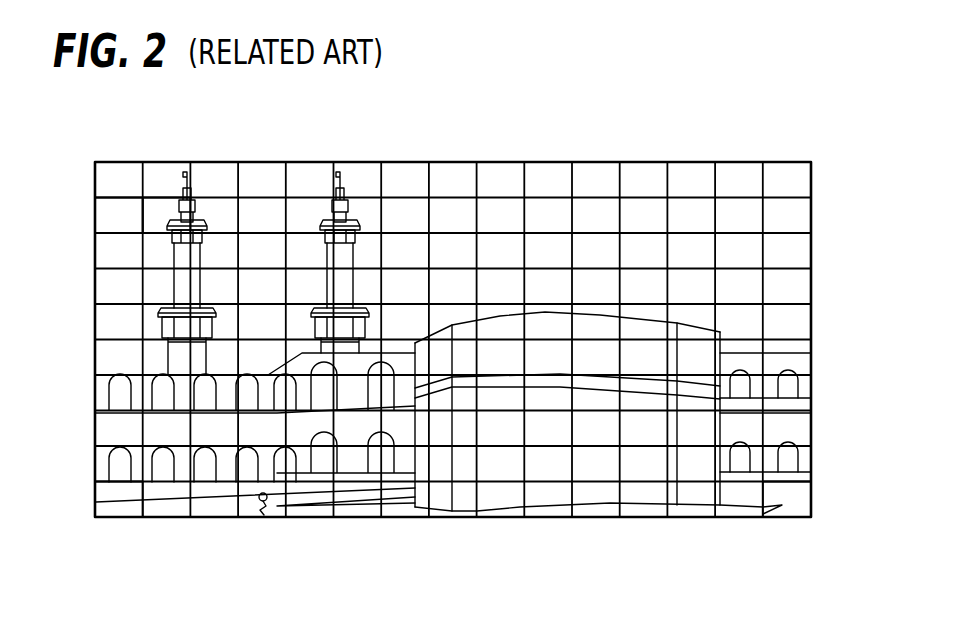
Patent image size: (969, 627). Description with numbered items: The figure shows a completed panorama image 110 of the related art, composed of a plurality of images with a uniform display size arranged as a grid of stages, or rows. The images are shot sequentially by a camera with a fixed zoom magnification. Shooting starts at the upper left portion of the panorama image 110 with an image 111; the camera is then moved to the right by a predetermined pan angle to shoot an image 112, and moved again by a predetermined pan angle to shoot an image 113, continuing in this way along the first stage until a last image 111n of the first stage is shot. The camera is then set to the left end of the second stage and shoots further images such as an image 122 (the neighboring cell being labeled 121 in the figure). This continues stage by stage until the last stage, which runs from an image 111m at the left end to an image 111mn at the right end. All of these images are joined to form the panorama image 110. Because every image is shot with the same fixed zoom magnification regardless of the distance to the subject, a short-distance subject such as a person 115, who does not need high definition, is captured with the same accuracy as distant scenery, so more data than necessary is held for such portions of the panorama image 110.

The panorama image 110 is at (619, 156).
The image 111 is at (118, 160).
The image 112 is at (169, 160).
The image 113 is at (218, 160).
The last image of the first stage 111n is at (790, 160).
The first pixel region 121 is at (112, 213).
The image 122 is at (156, 216).
The image of the left end of the last stage 111m is at (122, 512).
The image of the right end 111mn is at (790, 512).
The person 115 is at (263, 512).